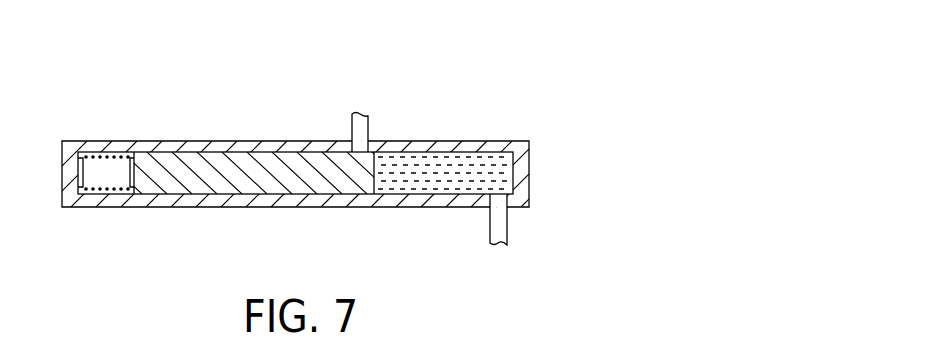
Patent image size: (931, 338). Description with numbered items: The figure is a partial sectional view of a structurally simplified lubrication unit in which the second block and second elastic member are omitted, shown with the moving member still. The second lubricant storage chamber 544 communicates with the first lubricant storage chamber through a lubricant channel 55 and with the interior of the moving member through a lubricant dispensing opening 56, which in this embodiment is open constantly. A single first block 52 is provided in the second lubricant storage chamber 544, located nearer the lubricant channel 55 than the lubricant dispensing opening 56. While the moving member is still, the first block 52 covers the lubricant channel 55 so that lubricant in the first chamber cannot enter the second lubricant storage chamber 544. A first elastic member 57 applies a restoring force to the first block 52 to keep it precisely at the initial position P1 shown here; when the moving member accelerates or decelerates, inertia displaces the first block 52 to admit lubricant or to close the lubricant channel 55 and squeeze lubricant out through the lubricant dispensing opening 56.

The initial position P1 is at (169, 96).
The first block 52 is at (284, 160).
The lubricant channel 55 is at (360, 126).
The lubricant dispensing opening 56 is at (501, 224).
The first elastic member 57 is at (104, 153).
The second lubricant storage chamber 544 is at (452, 162).